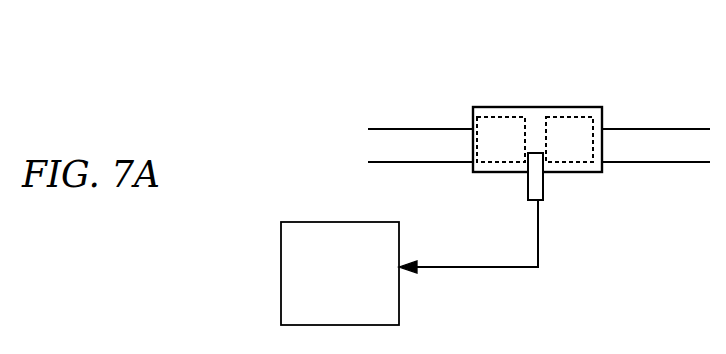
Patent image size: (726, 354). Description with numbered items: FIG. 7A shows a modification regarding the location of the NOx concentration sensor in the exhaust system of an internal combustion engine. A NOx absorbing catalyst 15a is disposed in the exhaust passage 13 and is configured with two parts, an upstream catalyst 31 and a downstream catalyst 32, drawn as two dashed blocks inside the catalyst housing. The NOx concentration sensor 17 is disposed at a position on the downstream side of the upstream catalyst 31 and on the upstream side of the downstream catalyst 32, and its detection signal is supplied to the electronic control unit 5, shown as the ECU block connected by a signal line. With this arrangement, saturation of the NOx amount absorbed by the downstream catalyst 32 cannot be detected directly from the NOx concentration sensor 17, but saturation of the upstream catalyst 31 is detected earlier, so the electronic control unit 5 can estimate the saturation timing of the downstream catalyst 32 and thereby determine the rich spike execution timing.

The exhaust passage 13 is at (387, 128).
The NOx absorbing catalyst 15a is at (512, 107).
The upstream catalyst 31 is at (473, 122).
The downstream catalyst 32 is at (592, 123).
The NOx concentration sensor 17 is at (545, 195).
The electronic control unit 5 is at (339, 221).